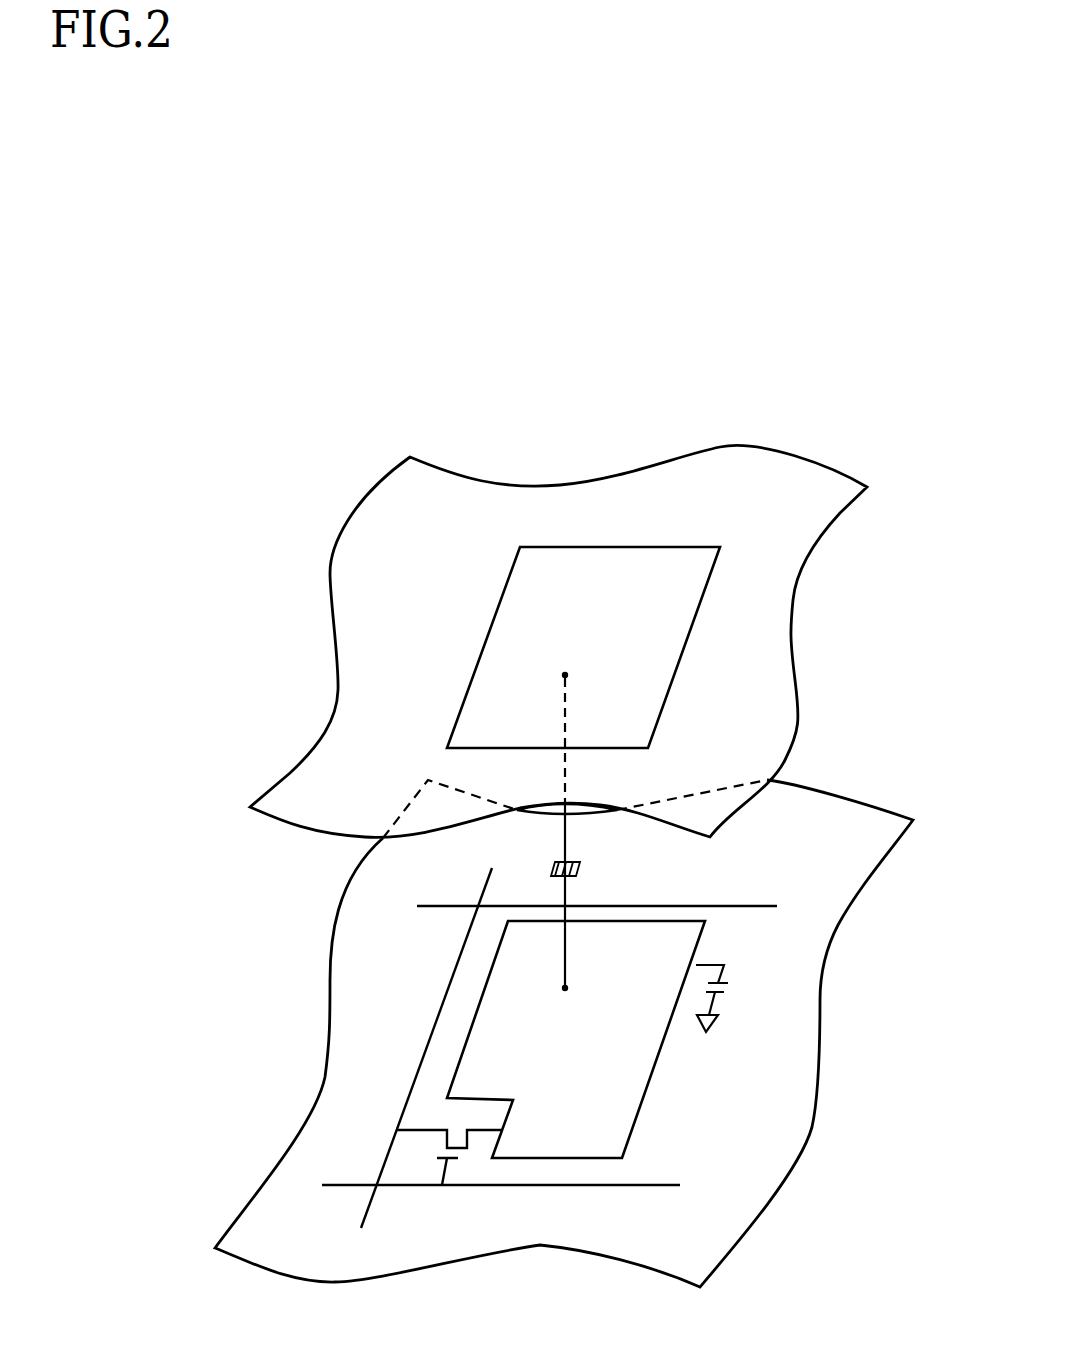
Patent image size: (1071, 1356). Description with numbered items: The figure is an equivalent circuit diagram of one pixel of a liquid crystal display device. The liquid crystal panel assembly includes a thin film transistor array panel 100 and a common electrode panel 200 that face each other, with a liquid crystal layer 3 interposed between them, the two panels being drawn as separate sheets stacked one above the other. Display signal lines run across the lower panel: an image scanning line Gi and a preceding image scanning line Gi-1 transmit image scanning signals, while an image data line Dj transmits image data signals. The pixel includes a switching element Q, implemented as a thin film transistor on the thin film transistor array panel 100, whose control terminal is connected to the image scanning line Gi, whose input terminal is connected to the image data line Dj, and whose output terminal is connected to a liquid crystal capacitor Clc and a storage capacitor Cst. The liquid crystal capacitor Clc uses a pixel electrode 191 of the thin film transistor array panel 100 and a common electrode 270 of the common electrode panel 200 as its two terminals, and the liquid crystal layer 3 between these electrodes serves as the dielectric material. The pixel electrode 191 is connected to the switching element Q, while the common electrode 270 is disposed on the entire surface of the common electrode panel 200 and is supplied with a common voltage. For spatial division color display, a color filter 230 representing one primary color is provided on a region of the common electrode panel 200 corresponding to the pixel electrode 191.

The liquid crystal layer 3 is at (251, 922).
The thin film transistor array panel 100 is at (822, 1009).
The pixel electrode 191 is at (647, 1091).
The common electrode panel 200 is at (583, 642).
The color filter 230 is at (677, 667).
The common electrode 270 is at (798, 676).
The liquid crystal capacitor Clc is at (589, 870).
The storage capacitor Cst is at (734, 998).
The switching element Q is at (449, 1157).
The image data line Dj is at (426, 1045).
The image scanning line Gi is at (498, 1165).
The previous image scanning line Gi-1 is at (582, 926).